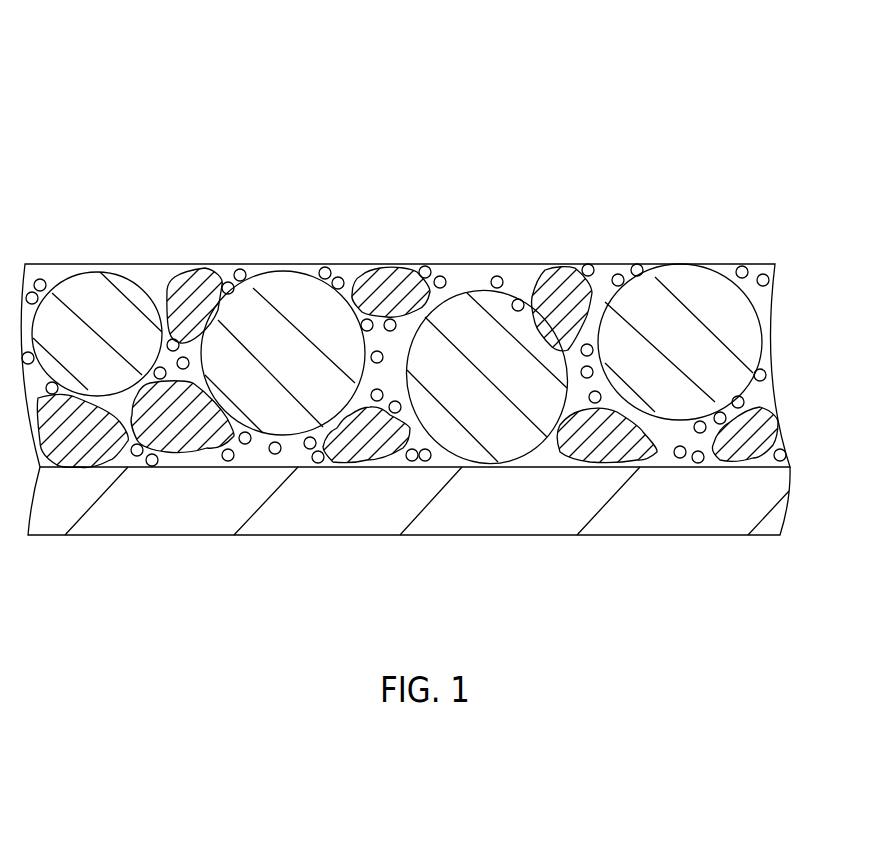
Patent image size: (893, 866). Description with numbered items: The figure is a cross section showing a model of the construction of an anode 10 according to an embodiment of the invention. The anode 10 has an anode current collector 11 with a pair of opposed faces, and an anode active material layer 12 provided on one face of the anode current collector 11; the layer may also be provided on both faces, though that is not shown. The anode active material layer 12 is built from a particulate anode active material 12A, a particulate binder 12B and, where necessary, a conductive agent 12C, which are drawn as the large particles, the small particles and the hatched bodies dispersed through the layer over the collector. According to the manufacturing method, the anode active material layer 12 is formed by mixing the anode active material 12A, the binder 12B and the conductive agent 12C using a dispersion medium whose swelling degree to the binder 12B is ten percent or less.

The anode 10 is at (598, 119).
The anode current collector 11 is at (475, 533).
The anode active material layer 12 is at (733, 220).
The anode active material 12A is at (118, 303).
The binder 12B is at (327, 272).
The conductive agent 12C is at (556, 300).